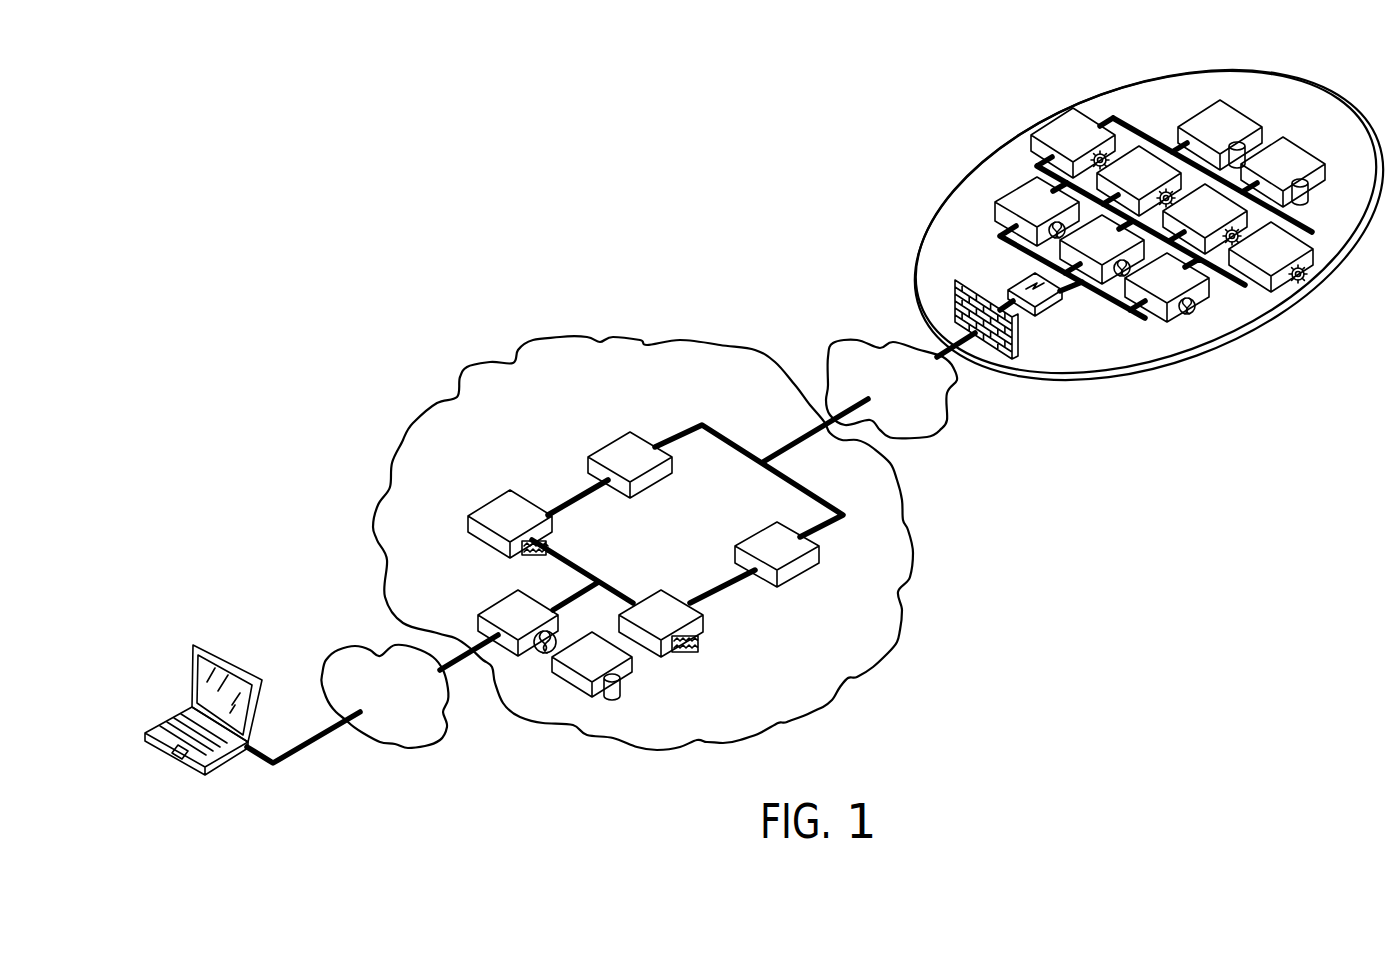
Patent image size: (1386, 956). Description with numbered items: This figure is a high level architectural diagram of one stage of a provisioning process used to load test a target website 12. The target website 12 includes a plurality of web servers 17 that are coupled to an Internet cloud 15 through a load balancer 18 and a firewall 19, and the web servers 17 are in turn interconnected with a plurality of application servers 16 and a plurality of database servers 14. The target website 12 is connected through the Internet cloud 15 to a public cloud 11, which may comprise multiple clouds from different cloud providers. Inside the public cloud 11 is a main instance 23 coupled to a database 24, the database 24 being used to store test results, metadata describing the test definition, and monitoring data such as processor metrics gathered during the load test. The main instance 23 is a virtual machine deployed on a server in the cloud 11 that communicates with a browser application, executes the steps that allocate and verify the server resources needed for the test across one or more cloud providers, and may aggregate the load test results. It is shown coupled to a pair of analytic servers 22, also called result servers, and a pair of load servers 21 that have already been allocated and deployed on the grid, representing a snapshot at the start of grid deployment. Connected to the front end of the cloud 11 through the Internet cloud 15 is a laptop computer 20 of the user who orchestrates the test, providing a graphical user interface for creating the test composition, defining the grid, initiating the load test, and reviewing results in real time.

The public cloud 11 is at (898, 642).
The target website 12 is at (1182, 392).
The database servers 14 is at (1282, 153).
The Internet cloud 15 is at (873, 345).
The application servers 16 is at (1203, 203).
The web servers 17 is at (1200, 270).
The load balancer 18 is at (1025, 283).
The firewall 19 is at (965, 300).
The laptop computer 20 is at (167, 717).
The load servers 21 is at (770, 547).
The analytic servers 22 is at (653, 606).
The main instance 23 is at (508, 610).
The database 24 is at (598, 661).